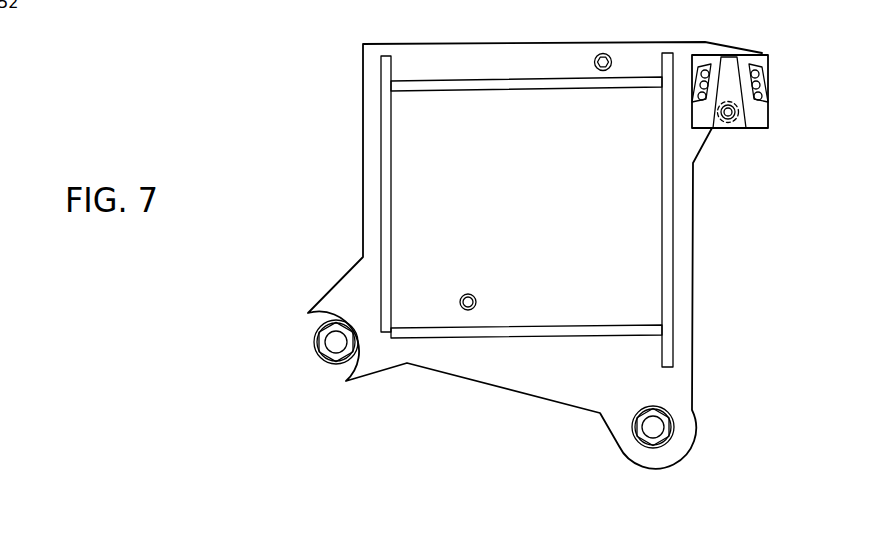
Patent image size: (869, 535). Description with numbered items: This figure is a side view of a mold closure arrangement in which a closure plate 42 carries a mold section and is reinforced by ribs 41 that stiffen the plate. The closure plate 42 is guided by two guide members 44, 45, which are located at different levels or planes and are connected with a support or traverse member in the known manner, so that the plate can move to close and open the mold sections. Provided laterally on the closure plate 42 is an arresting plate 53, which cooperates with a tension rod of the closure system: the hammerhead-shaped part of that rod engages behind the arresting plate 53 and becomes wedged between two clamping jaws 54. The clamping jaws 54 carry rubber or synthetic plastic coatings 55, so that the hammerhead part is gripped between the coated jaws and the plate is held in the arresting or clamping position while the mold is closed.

The ribs 41 is at (453, 86).
The closure plate 42 is at (363, 180).
The guide member 44 is at (336, 350).
The guide member 45 is at (645, 428).
The arresting plate 53 is at (762, 117).
The clamping jaws 54 is at (755, 78).
The rubber or synthetic plastic coatings 55 is at (718, 78).